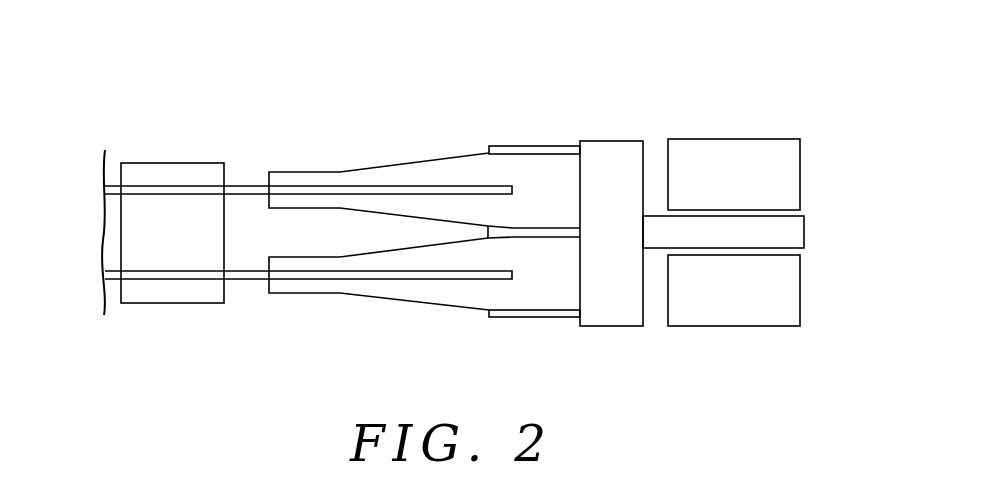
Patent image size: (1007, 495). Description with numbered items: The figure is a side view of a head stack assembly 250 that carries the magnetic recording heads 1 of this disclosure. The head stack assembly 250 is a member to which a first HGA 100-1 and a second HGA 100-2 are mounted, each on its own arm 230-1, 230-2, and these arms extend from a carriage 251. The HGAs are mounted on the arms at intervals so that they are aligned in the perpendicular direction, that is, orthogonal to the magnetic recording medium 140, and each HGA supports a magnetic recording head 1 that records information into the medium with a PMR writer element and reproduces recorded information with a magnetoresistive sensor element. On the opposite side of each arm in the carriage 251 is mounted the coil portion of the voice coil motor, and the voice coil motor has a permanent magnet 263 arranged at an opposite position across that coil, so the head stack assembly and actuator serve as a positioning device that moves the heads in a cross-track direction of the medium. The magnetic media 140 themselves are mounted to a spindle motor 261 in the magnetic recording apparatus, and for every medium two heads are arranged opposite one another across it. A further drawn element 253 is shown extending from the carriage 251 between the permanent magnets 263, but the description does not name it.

The magnetic recording head 1 is at (268, 178).
The magnetic recording medium 140 is at (238, 188).
The spindle motor 261 is at (161, 177).
The first HGA 100-1 is at (360, 177).
The second HGA 100-2 is at (362, 287).
The arm 230-1 is at (498, 147).
The arm 230-2 is at (493, 318).
The head stack assembly 250 is at (611, 218).
The carriage 251 is at (612, 312).
The shaft 253 is at (793, 232).
The permanent magnet 263 is at (733, 153).